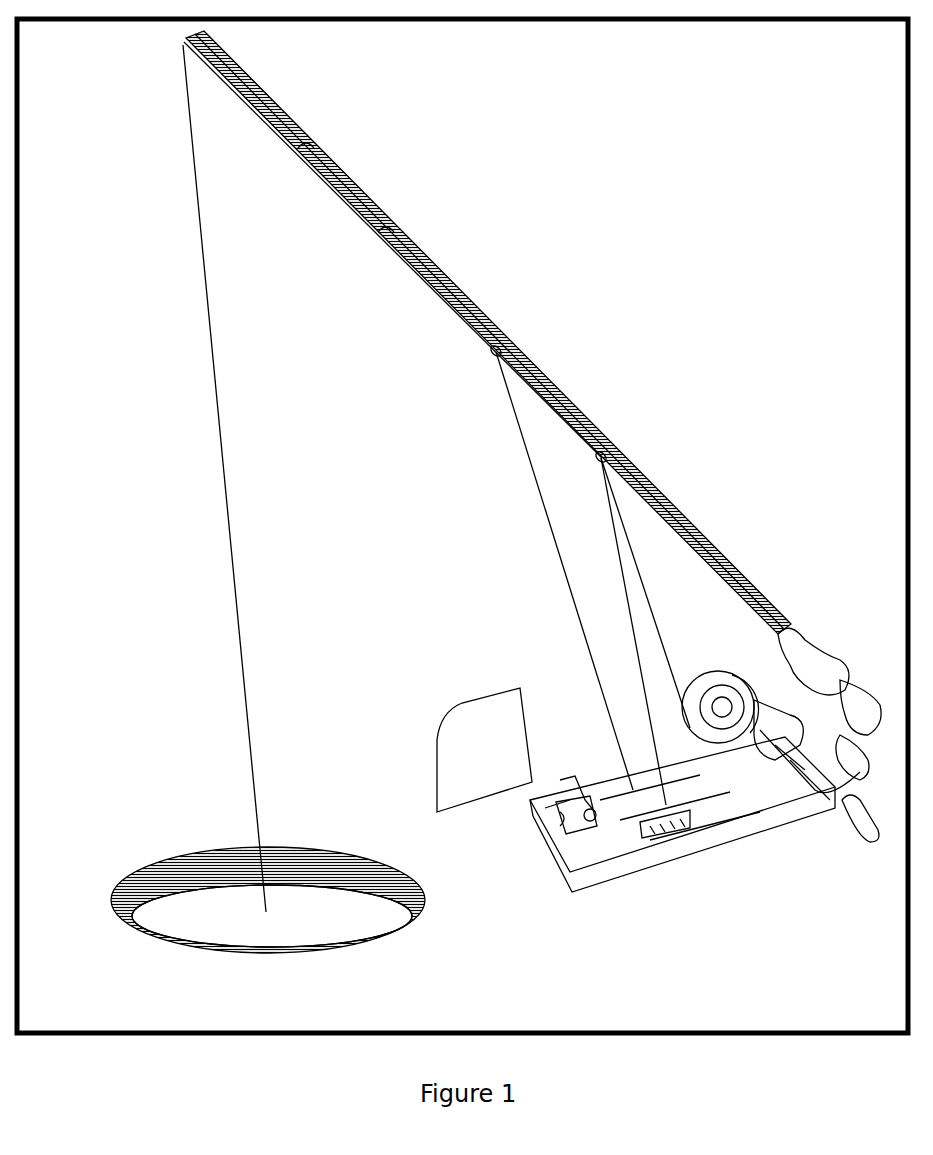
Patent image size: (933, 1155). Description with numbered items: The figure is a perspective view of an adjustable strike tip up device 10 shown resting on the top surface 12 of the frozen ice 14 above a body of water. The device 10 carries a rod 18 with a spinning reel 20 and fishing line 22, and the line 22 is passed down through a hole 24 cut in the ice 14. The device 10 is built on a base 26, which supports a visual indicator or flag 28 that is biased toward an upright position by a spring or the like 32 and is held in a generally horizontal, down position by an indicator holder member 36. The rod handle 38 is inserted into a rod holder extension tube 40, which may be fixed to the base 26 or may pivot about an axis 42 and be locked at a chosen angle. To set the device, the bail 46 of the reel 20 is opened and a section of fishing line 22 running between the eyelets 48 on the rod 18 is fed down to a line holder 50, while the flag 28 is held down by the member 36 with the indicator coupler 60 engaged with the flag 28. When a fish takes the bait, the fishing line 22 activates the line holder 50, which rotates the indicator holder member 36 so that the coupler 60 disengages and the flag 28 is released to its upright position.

The adjustable strike tip up device 10 is at (753, 833).
The top surface 12 is at (157, 746).
The frozen ice 14 is at (305, 877).
The rod 18 is at (692, 520).
The spinning reel 20 is at (768, 722).
The fishing line 22 is at (225, 465).
The hole 24 is at (207, 915).
The base 26 is at (604, 870).
The flag 28 is at (483, 735).
The spring 32 is at (837, 730).
The indicator holder member 36 is at (573, 812).
The rod handle 38 is at (820, 665).
The rod holder extension tube 40 is at (864, 690).
The axis 42 is at (873, 740).
The bail 46 is at (697, 663).
The eyelets 48 is at (500, 350).
The line holder 50 is at (663, 830).
The indicator coupler 60 is at (567, 775).